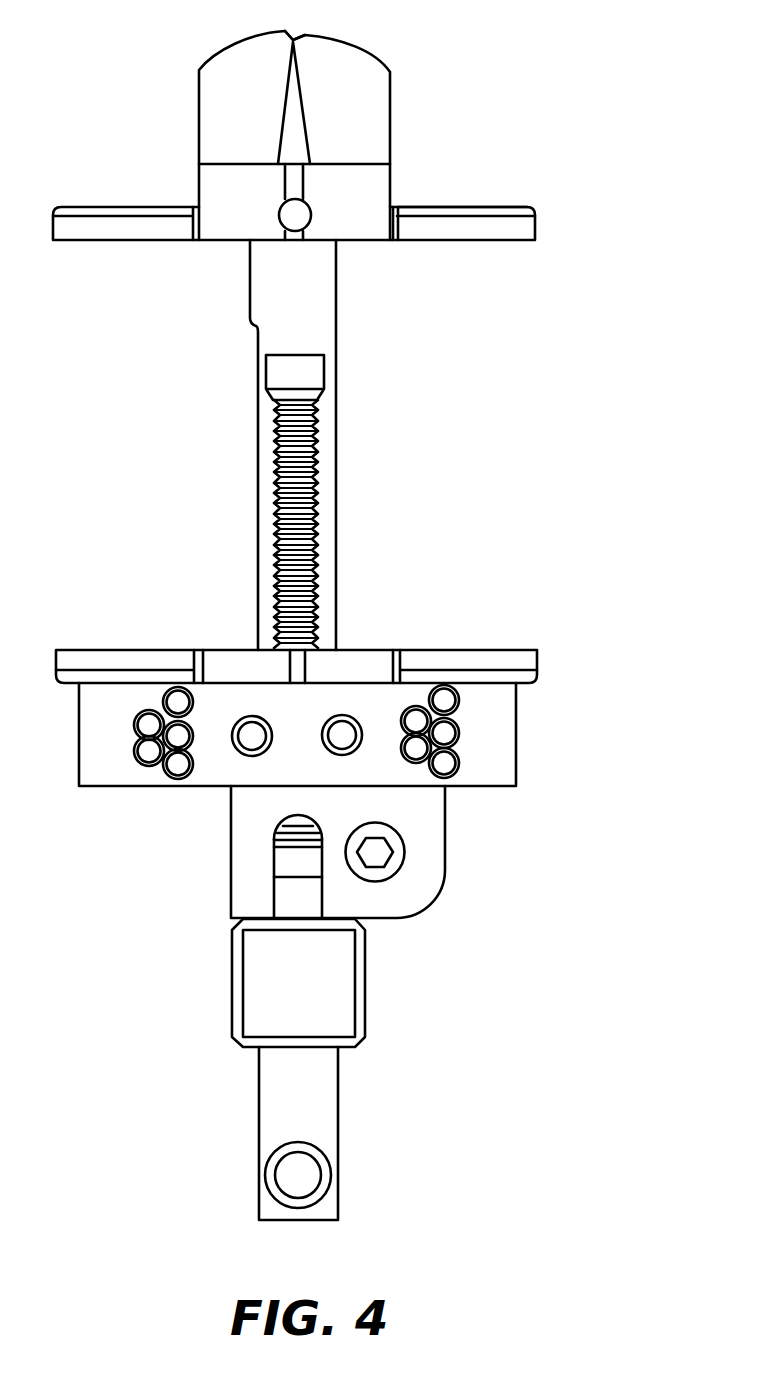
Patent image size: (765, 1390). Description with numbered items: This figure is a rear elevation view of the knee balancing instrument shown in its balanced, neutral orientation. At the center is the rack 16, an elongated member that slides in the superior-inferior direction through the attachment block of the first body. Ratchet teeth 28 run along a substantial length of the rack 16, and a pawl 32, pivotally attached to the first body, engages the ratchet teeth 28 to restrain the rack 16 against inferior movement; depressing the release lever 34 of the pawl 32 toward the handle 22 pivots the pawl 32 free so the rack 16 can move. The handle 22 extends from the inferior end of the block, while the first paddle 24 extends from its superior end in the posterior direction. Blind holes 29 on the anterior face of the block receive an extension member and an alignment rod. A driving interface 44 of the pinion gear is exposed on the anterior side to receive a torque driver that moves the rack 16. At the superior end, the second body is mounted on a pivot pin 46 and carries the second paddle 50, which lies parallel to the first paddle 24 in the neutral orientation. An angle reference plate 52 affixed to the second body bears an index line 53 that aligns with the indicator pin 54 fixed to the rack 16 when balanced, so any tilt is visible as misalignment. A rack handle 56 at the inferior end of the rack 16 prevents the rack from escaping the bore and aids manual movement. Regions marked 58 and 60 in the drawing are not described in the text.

The rack 16 is at (338, 324).
The handle 22 is at (336, 976).
The first paddle 24 is at (538, 661).
The ratchet teeth 28 is at (317, 479).
The blind holes 29 is at (264, 752).
The pawl 32 is at (292, 862).
The release lever 34 is at (285, 900).
The driving interface 44 is at (392, 862).
The pivot pin 46 is at (293, 218).
The second paddle 50 is at (536, 229).
The angle reference plate 52 is at (210, 90).
The index line 53 is at (305, 38).
The indicator pin 54 is at (300, 70).
The rack handle 56 is at (345, 1148).
The block 58 is at (524, 684).
The flange top surface 60 is at (476, 206).